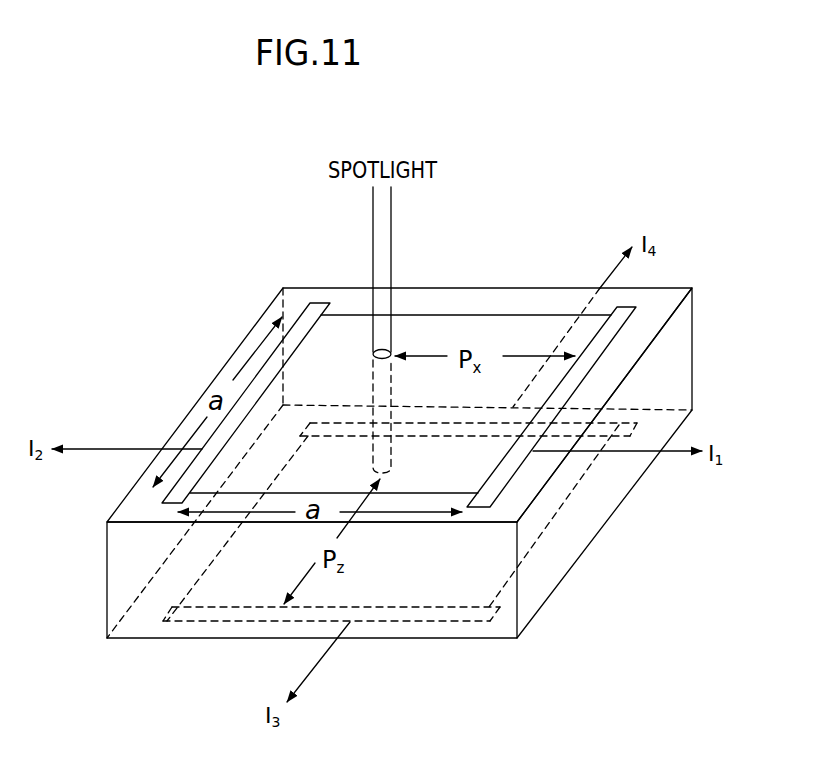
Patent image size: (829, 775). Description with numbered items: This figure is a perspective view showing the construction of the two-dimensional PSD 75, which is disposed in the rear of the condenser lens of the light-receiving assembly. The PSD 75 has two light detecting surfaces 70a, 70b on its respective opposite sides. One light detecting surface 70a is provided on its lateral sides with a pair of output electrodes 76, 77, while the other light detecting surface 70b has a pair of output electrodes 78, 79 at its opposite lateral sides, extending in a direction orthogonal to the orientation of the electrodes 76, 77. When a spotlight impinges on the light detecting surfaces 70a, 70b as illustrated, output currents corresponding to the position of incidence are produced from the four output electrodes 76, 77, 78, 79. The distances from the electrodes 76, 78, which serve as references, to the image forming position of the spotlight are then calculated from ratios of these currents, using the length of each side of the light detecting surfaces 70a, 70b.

The two-dimensional PSD 75 is at (569, 242).
The light detecting surface 70a is at (479, 332).
The light detecting surface 70b is at (491, 556).
The output electrode 76 is at (617, 331).
The output electrode 77 is at (298, 337).
The output electrode 78 is at (440, 623).
The output electrode 79 is at (636, 422).